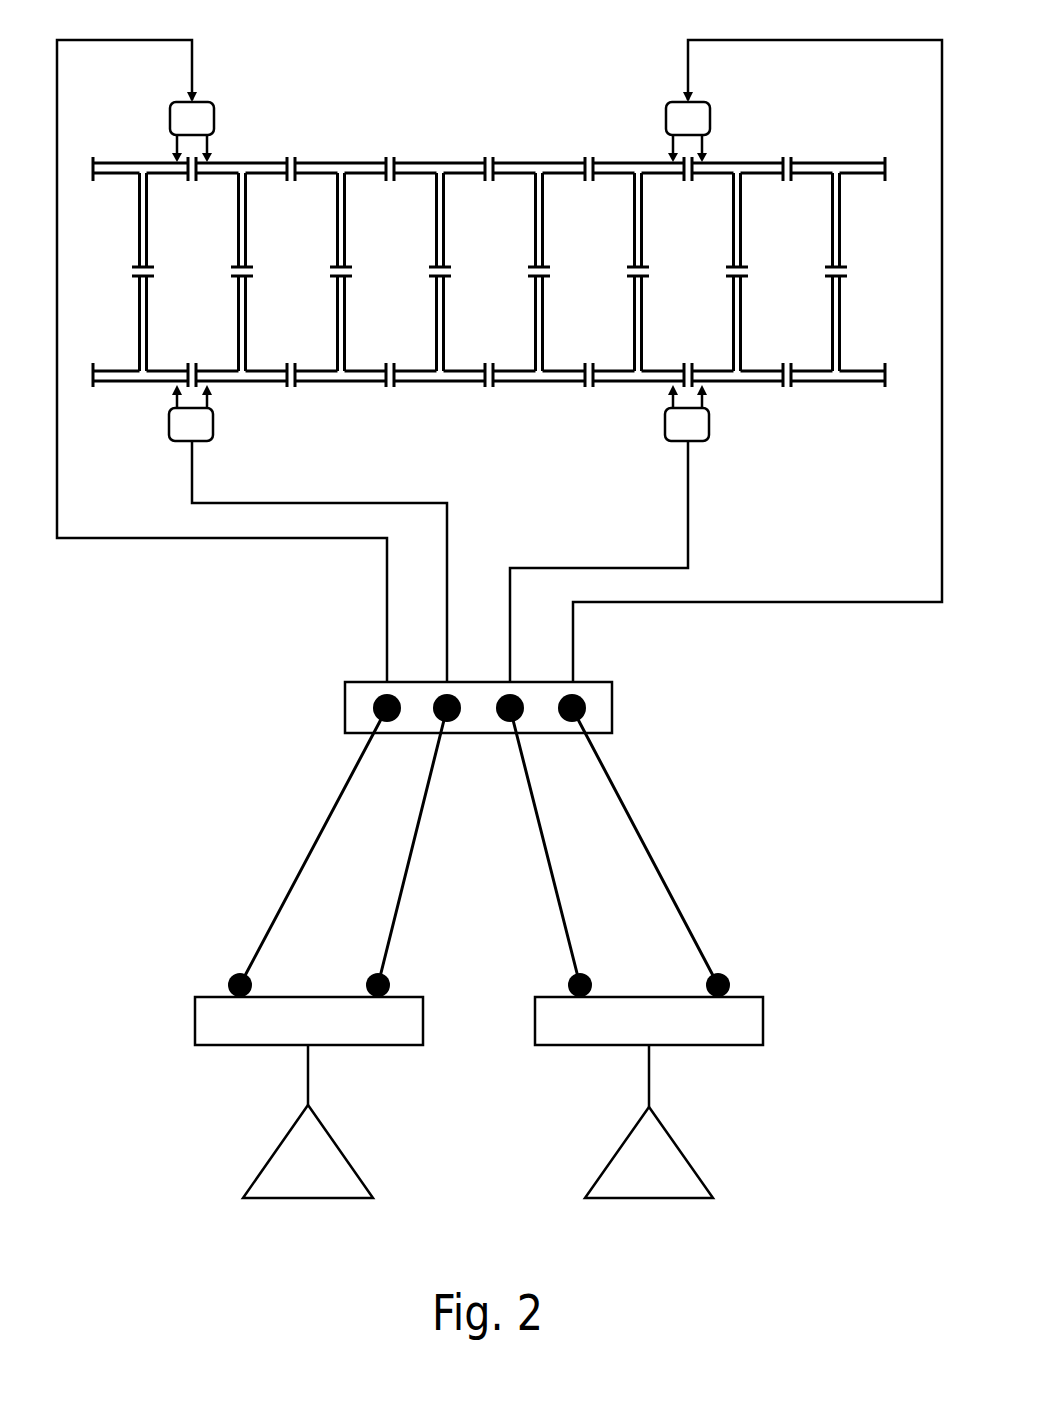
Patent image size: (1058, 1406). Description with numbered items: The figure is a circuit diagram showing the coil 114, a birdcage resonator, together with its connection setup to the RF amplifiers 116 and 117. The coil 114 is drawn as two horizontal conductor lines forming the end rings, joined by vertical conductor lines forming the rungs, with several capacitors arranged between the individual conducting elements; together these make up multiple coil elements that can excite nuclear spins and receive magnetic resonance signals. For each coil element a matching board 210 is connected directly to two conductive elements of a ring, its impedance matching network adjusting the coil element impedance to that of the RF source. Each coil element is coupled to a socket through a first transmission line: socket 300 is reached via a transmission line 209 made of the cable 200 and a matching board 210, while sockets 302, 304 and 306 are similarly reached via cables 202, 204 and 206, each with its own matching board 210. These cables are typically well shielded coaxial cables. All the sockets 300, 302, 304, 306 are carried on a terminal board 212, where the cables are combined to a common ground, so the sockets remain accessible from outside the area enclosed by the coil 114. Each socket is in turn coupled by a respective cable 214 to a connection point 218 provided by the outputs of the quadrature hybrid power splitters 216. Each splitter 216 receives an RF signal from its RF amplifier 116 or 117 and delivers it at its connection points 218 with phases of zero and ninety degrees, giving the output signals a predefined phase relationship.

The coil 114 is at (520, 100).
The matching board 210 is at (214, 112).
The cable 200 is at (97, 538).
The cable 202 is at (405, 503).
The cable 204 is at (562, 568).
The cable 206 is at (790, 602).
The transmission line 209 is at (128, 583).
The terminal board 212 is at (612, 705).
The socket 300 is at (392, 692).
The socket 302 is at (454, 692).
The socket 304 is at (516, 692).
The socket 306 is at (580, 692).
The cable 214 is at (557, 797).
The connection point 218 is at (240, 973).
The quadrature hybrid power splitter 216 is at (387, 1047).
The RF amplifier 116 is at (308, 1200).
The RF amplifier 117 is at (649, 1200).